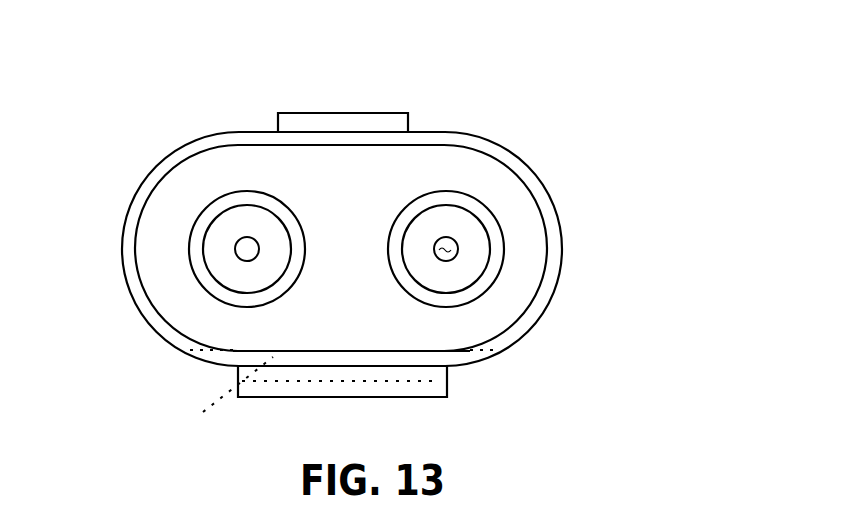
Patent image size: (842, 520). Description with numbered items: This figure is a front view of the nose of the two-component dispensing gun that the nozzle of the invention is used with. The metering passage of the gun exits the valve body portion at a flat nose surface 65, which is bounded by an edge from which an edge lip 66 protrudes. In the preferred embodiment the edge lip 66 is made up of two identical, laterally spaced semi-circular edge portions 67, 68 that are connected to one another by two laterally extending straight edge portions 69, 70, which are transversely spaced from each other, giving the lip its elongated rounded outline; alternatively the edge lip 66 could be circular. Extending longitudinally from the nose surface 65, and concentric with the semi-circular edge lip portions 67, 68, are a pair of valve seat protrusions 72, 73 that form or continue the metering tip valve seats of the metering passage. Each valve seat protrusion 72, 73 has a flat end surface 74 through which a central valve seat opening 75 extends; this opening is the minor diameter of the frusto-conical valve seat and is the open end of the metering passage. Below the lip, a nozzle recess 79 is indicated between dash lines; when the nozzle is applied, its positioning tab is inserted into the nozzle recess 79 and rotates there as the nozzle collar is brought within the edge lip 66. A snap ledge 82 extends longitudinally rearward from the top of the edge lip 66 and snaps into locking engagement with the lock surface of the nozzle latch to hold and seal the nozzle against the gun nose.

The flat nose surface 65 is at (359, 211).
The edge lip 66 is at (530, 179).
The semi-circular edge portion 67 is at (558, 282).
The semi-circular edge portion 68 is at (122, 242).
The straight edge portion 69 is at (465, 132).
The straight edge portion 70 is at (308, 350).
The valve seat protrusion 72 is at (242, 190).
The valve seat protrusion 73 is at (478, 200).
The flat end surface 74 is at (277, 280).
The central valve seat opening 75 is at (450, 258).
The nozzle recess 79 is at (221, 397).
The snap ledge 82 is at (355, 113).